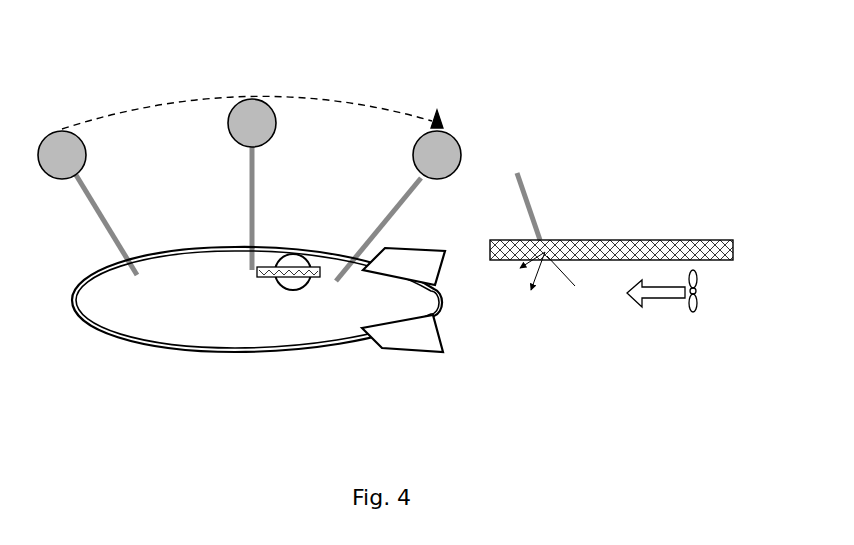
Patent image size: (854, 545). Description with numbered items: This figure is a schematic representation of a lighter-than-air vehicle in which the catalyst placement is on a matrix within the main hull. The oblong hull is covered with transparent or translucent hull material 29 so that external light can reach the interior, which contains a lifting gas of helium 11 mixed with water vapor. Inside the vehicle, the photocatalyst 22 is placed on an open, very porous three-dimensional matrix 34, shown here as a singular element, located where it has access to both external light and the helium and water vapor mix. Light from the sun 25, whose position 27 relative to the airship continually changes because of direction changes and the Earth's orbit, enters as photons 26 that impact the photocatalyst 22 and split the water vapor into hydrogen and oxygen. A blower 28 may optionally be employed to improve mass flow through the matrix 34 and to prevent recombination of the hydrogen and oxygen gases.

The helium 11 is at (258, 296).
The photocatalyst 22 is at (634, 262).
The sun 25 is at (60, 141).
The photons 26 is at (536, 201).
The position 27 is at (320, 98).
The blower 28 is at (704, 296).
The transparent or translucent hull material 29 is at (198, 247).
The three-dimensional matrix 34 is at (710, 239).